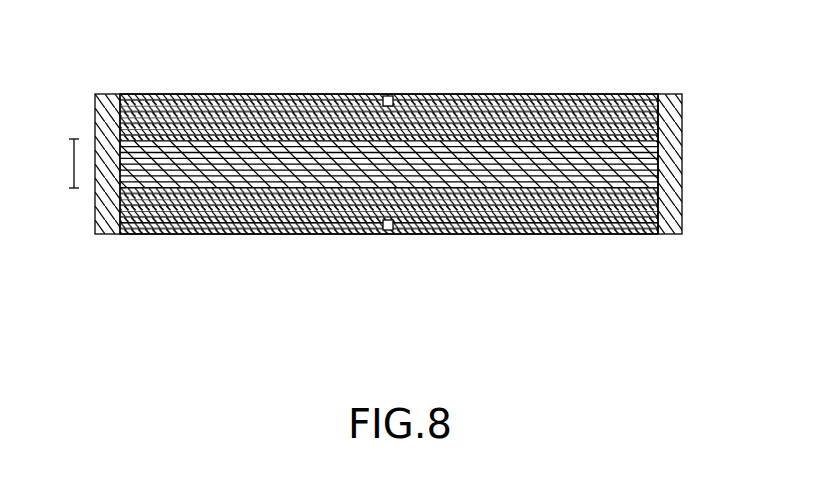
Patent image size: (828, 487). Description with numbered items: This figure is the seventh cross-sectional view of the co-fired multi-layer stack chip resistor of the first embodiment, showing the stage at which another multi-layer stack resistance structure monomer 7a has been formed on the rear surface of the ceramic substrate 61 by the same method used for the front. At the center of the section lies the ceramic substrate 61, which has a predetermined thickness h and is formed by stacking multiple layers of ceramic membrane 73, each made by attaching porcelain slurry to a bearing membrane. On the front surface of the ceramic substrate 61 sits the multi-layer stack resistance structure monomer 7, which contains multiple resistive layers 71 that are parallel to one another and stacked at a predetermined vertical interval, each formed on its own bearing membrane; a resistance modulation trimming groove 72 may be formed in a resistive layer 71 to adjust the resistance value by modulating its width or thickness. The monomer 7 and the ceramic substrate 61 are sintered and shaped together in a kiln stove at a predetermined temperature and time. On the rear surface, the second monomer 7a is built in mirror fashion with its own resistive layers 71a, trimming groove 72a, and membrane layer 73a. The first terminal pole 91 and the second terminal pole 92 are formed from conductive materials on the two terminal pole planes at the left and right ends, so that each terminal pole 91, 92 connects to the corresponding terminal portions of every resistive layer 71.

The multi-layer stack resistance structure monomer 7 is at (391, 166).
The multi-layer stack resistance structure monomer 7a is at (617, 230).
The resistive layer 71 is at (557, 86).
The lower first sheet layer 71a is at (557, 227).
The resistance modulation trimming groove 72 is at (380, 86).
The lower wire / conductor element 72a is at (382, 227).
The ceramic membrane 73 is at (466, 86).
The bottom sheet layer 73a is at (458, 227).
The first terminal pole 91 is at (95, 86).
The second terminal pole 92 is at (658, 86).
The ceramic substrate 61 is at (650, 152).
The predetermined thickness h is at (61, 158).